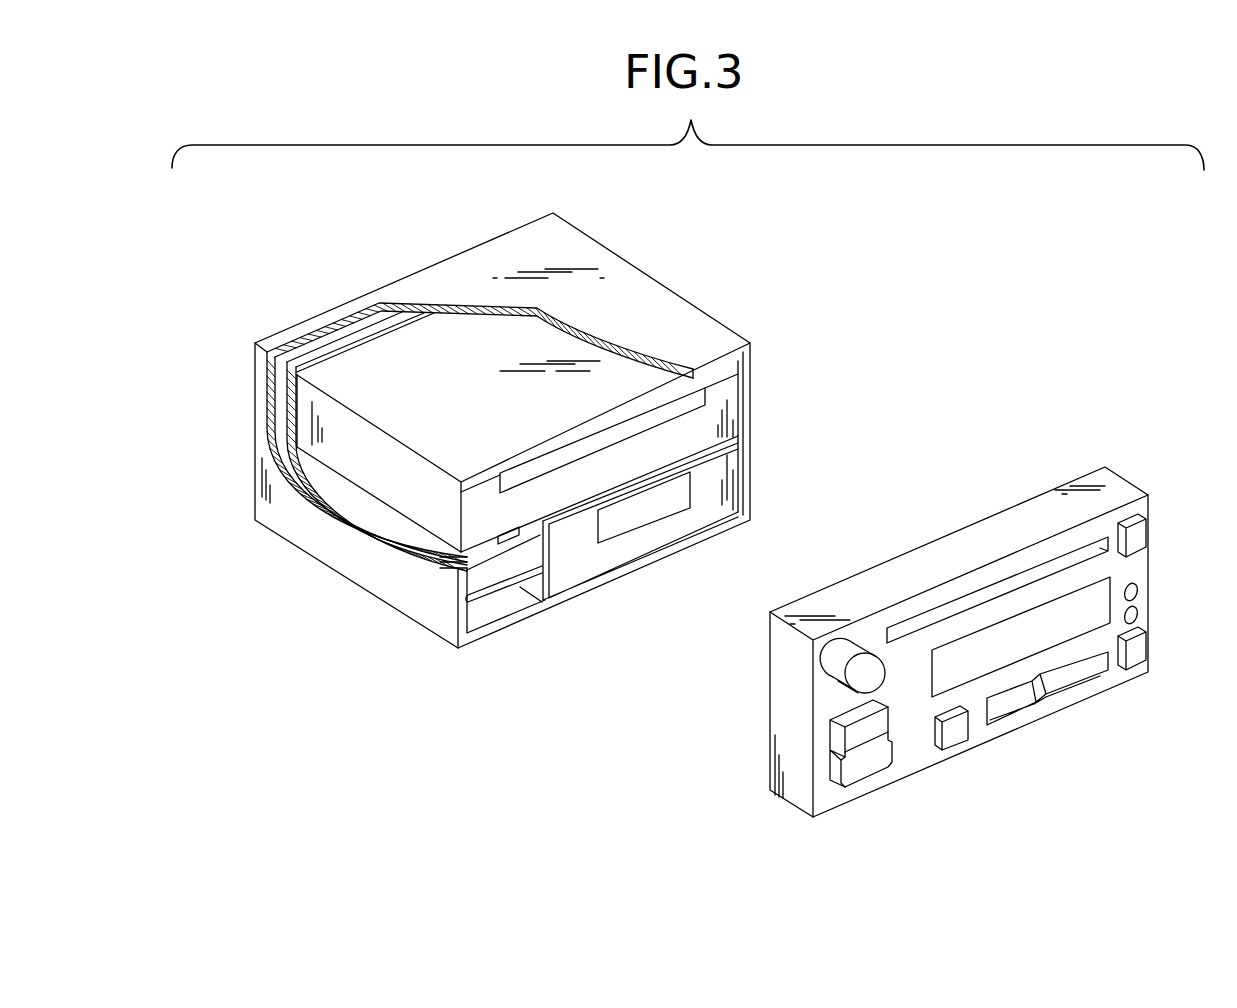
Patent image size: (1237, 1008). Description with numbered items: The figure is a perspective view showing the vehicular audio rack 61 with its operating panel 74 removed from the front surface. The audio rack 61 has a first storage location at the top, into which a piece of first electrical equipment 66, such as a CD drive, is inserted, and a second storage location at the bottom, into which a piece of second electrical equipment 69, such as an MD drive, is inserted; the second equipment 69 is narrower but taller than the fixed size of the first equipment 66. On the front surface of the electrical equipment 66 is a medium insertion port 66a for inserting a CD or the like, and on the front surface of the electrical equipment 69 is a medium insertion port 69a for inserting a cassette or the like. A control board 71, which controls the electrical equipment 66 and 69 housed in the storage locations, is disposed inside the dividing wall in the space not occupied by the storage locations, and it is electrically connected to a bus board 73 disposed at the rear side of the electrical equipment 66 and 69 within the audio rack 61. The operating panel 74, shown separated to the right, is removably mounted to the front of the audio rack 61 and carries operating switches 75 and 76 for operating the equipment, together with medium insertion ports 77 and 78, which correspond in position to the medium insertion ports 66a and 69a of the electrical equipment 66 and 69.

The vehicular audio rack 61 is at (630, 283).
The first electrical equipment 66 is at (702, 428).
The medium insertion port 66a is at (703, 395).
The second electrical equipment 69 is at (713, 481).
The medium insertion port 69a is at (668, 507).
The control board 71 is at (493, 575).
The bus board 73 is at (312, 357).
The operating panel 74 is at (781, 802).
The operating switch 75 is at (832, 663).
The operating switch 76 is at (870, 773).
The medium insertion port 77 is at (1030, 570).
The medium insertion port 78 is at (1112, 622).